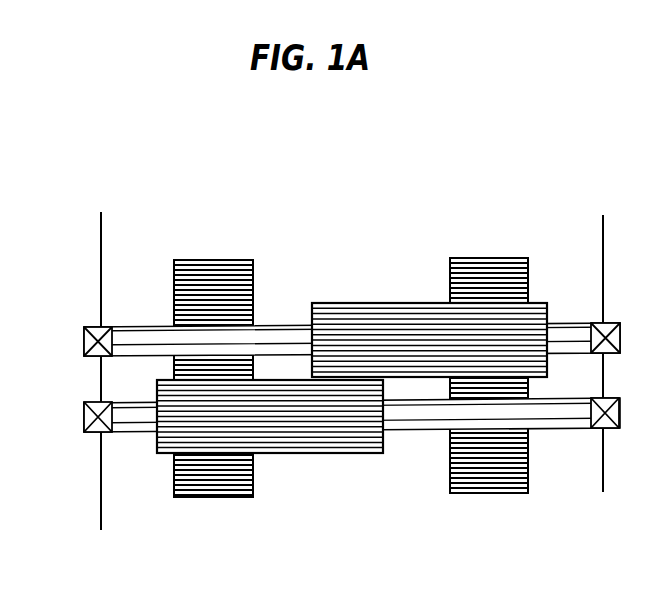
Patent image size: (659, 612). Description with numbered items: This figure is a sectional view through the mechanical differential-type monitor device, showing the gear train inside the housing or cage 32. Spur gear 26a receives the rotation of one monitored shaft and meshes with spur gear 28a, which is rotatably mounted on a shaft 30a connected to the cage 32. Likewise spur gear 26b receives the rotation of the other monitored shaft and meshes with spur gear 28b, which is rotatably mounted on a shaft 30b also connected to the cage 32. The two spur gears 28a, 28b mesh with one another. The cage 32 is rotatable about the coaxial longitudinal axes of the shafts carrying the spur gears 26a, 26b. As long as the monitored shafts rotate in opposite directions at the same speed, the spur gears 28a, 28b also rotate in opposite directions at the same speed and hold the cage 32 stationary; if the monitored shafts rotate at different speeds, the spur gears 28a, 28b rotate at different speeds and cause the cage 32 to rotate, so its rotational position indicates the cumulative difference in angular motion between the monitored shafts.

The spur gear 26a is at (223, 485).
The spur gear 26b is at (487, 270).
The spur gear 28a is at (223, 423).
The spur gear 28b is at (428, 331).
The shaft 30a is at (130, 427).
The shaft 30b is at (565, 333).
The cage 32 is at (623, 263).